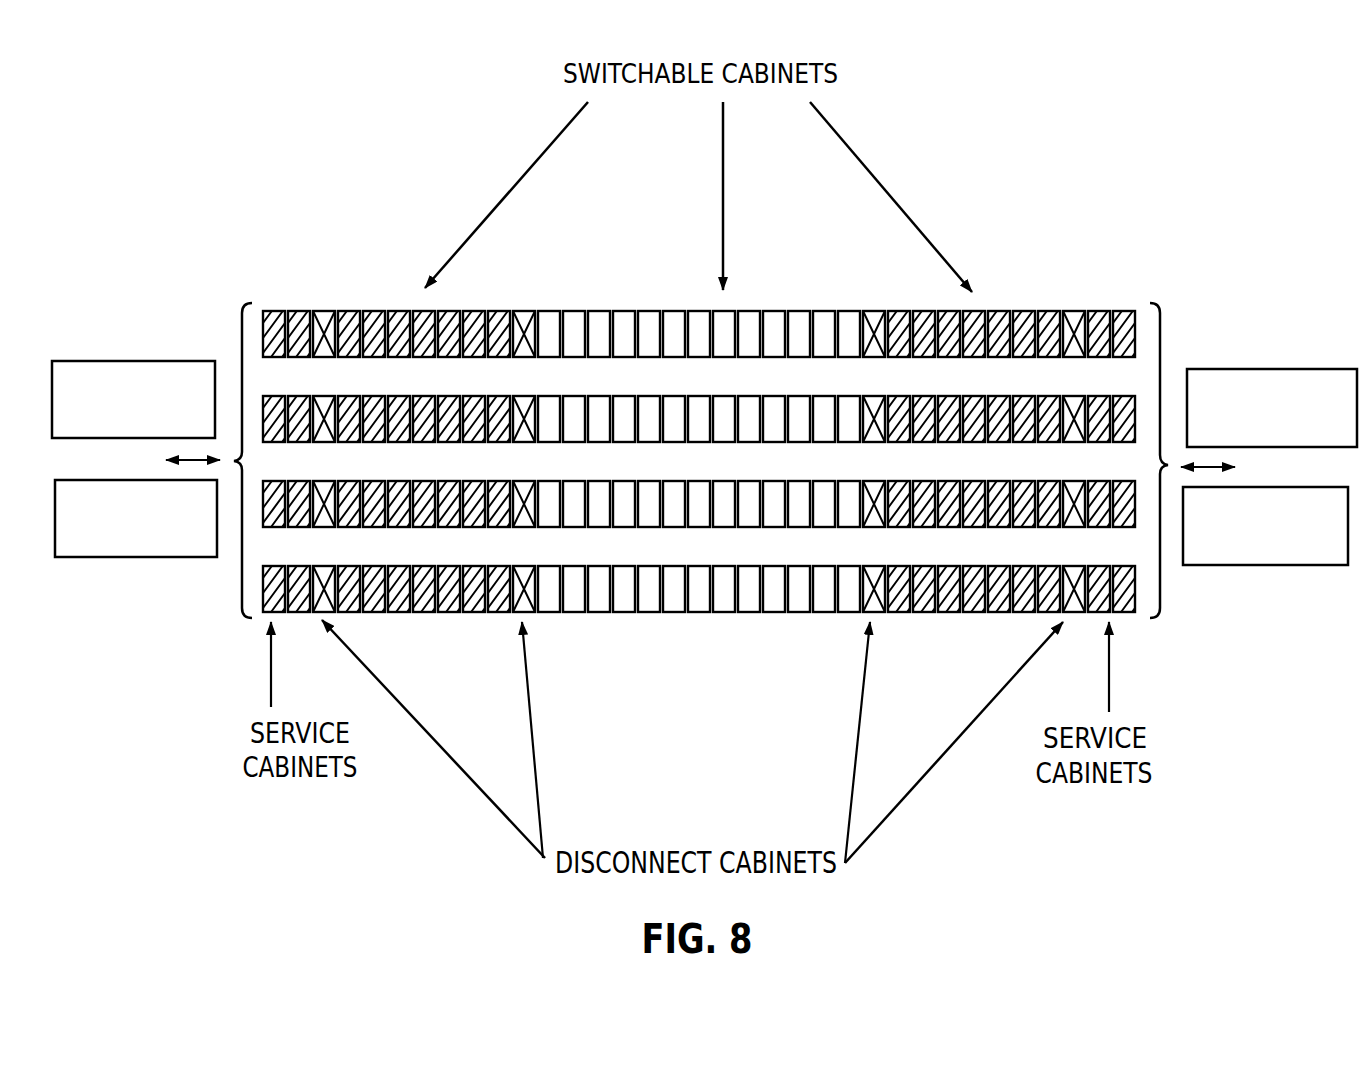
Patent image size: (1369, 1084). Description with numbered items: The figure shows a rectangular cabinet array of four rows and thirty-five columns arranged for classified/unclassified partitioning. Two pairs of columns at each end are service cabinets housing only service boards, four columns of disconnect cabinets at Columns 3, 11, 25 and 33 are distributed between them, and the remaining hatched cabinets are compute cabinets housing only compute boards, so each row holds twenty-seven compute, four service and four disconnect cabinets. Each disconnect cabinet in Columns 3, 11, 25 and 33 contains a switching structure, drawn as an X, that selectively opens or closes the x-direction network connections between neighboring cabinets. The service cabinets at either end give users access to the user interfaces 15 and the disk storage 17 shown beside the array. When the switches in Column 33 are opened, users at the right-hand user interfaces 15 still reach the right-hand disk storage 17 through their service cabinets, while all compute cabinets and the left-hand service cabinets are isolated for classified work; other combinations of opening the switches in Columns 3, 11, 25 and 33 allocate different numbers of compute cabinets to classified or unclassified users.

The column 3 disconnect cabinets 3 is at (324, 305).
The column 11 disconnect cabinets 11 is at (524, 305).
The column 25 disconnect cabinets 25 is at (873, 305).
The column 33 disconnect cabinets 33 is at (1072, 305).
The user interfaces 15 is at (83, 366).
The disk storage 17 is at (77, 548).